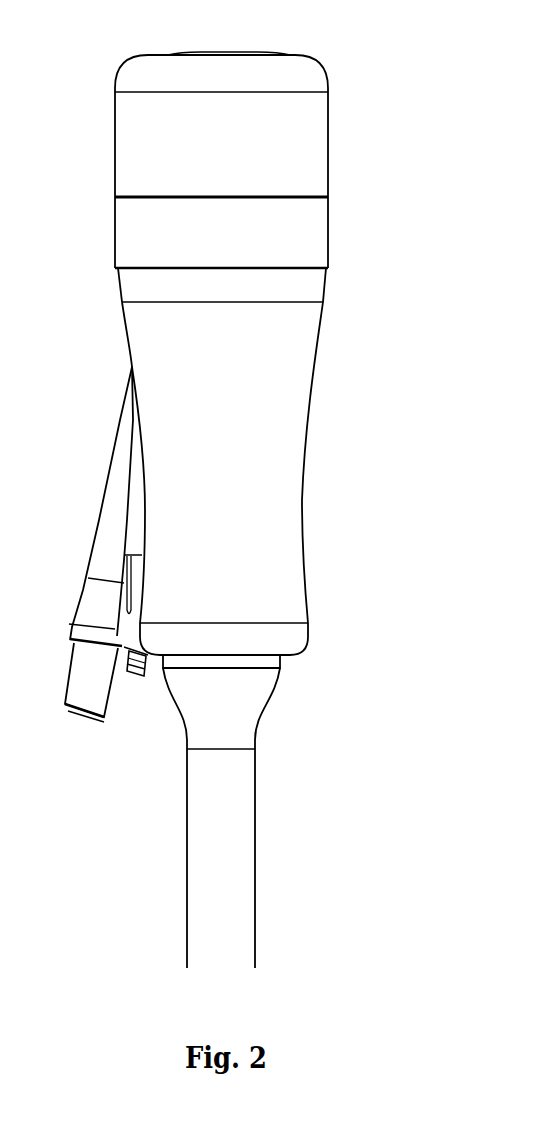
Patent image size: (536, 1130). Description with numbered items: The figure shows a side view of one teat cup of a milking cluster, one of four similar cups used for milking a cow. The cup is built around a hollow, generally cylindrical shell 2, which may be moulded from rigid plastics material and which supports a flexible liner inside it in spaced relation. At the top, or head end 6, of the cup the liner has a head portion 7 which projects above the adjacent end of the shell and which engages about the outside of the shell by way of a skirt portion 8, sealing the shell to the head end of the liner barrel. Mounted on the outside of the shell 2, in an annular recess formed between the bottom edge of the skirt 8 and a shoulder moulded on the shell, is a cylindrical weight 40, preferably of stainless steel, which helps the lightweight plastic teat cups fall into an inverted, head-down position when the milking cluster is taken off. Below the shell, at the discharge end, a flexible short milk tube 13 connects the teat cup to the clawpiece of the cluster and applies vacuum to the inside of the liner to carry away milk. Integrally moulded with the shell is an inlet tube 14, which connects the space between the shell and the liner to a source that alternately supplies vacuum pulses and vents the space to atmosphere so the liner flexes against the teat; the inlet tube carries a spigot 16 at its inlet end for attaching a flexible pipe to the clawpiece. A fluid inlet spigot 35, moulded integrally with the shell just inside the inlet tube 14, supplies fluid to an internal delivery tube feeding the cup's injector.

The head end 6 is at (117, 50).
The head portion 7 is at (298, 78).
The skirt portion 8 is at (229, 186).
The cylindrical weight 40 is at (204, 246).
The shell 2 is at (229, 476).
The short milk tube 13 is at (203, 856).
The inlet tube 14 is at (118, 495).
The spigot 16 is at (87, 693).
The fluid inlet spigot 35 is at (140, 678).